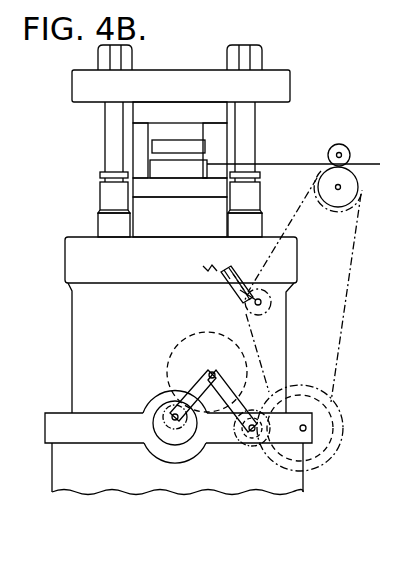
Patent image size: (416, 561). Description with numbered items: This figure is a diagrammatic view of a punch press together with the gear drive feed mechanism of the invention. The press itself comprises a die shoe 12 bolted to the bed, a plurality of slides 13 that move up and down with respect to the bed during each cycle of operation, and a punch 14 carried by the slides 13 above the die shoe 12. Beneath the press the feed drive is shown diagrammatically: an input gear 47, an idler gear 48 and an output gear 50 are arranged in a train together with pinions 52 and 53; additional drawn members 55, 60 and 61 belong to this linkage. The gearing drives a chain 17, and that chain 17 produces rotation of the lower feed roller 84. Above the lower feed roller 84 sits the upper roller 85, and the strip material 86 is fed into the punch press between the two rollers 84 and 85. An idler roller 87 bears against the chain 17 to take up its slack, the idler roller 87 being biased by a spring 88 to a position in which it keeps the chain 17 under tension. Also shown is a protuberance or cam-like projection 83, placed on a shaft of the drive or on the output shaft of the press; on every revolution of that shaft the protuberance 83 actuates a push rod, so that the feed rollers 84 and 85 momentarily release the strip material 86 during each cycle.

The die shoe 12 is at (190, 171).
The slides 13 is at (105, 123).
The punch 14 is at (205, 147).
The chain 17 is at (340, 330).
The input gear 47 is at (152, 446).
The idler gear 48 is at (180, 345).
The output gear 50 is at (246, 440).
The pinion 52 is at (262, 442).
The pinion 53 is at (332, 452).
The drive wheel 55 is at (320, 433).
The toggle link 60 is at (196, 385).
The toggle link 61 is at (230, 390).
The protuberance 83 is at (186, 462).
The lower feed roller 84 is at (338, 208).
The upper roller 85 is at (339, 144).
The strip material 86 is at (272, 164).
The idler roller 87 is at (273, 305).
The spring 88 is at (232, 292).